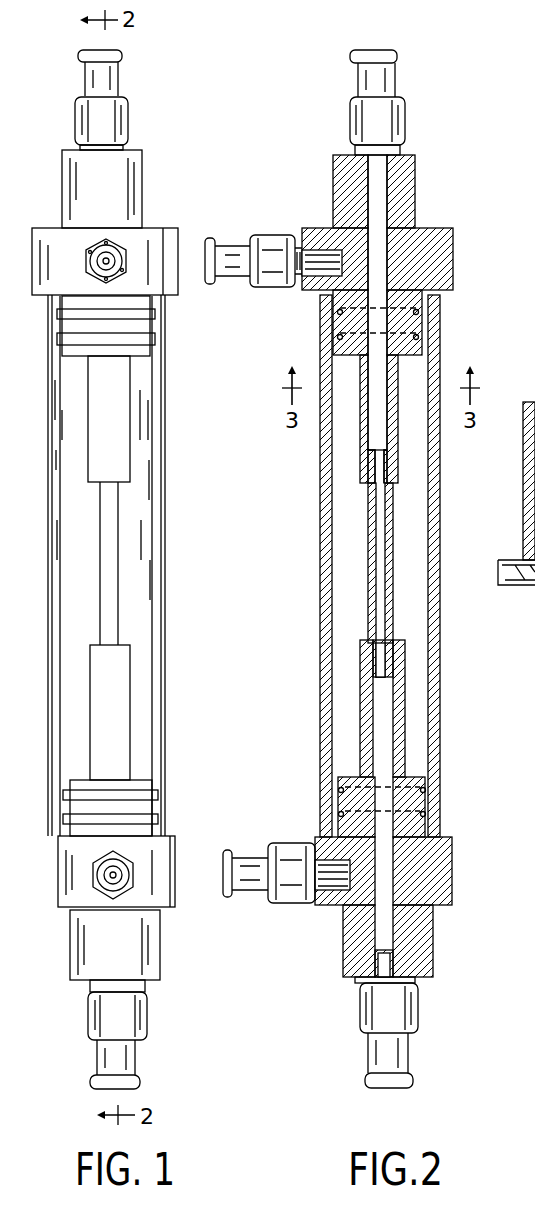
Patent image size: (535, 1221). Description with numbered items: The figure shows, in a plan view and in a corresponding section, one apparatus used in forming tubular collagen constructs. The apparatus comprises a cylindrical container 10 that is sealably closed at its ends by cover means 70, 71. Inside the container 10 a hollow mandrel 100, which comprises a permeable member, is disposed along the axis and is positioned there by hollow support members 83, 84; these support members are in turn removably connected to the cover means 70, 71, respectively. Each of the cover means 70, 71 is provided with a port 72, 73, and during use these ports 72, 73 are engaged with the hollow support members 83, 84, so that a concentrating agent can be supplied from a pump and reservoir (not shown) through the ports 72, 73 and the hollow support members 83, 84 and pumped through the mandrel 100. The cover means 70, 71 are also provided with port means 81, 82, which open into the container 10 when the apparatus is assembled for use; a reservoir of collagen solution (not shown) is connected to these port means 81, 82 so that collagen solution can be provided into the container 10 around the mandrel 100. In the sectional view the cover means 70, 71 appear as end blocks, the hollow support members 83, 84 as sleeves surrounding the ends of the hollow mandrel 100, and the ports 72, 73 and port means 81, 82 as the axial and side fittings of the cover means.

In FIG. 1, the cylindrical container 10 is at (186, 546).
In FIG. 2, the cylindrical container 10 is at (456, 538).
In FIG. 1, the cover means 70 is at (162, 168).
In FIG. 2, the cover means 70 is at (462, 246).
In FIG. 1, the cover means 71 is at (166, 1028).
In FIG. 2, the cover means 71 is at (436, 1025).
In FIG. 1, the port 72 is at (118, 54).
In FIG. 2, the port 72 is at (375, 52).
In FIG. 1, the port 73 is at (125, 1095).
In FIG. 2, the port 73 is at (390, 1087).
In FIG. 1, the port means 81 is at (107, 261).
In FIG. 2, the port means 81 is at (205, 262).
In FIG. 1, the port means 82 is at (133, 908).
In FIG. 2, the port means 82 is at (352, 777).
In FIG. 1, the hollow support member 83 is at (128, 386).
In FIG. 2, the hollow support member 83 is at (362, 442).
In FIG. 1, the hollow support member 84 is at (128, 689).
In FIG. 2, the hollow support member 84 is at (360, 694).
In FIG. 1, the hollow mandrel 100 is at (119, 578).
In FIG. 2, the hollow mandrel 100 is at (366, 540).